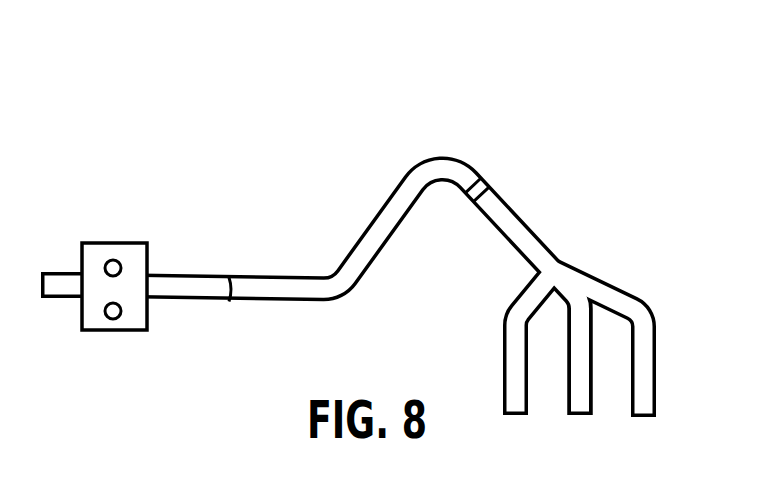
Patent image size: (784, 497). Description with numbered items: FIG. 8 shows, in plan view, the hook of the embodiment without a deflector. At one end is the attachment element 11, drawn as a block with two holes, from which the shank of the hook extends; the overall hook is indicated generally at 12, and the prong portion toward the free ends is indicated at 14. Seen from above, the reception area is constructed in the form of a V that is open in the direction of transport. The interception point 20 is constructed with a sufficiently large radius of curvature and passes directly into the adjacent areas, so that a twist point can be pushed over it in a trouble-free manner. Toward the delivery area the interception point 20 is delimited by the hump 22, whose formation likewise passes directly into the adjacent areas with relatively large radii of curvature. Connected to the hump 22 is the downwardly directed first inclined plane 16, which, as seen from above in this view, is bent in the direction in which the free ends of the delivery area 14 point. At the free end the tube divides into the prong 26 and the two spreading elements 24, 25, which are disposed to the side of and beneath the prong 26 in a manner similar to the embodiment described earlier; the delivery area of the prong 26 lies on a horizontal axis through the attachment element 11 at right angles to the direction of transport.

The attachment element 11 is at (93, 313).
The tubular element 12 is at (433, 119).
The delivery area 14 is at (558, 131).
The first inclined plane 16 is at (522, 237).
The interception point 20 is at (420, 163).
The hump 22 is at (472, 202).
The spreading element 24 is at (518, 330).
The spreading element 25 is at (643, 365).
The prong 26 is at (580, 363).